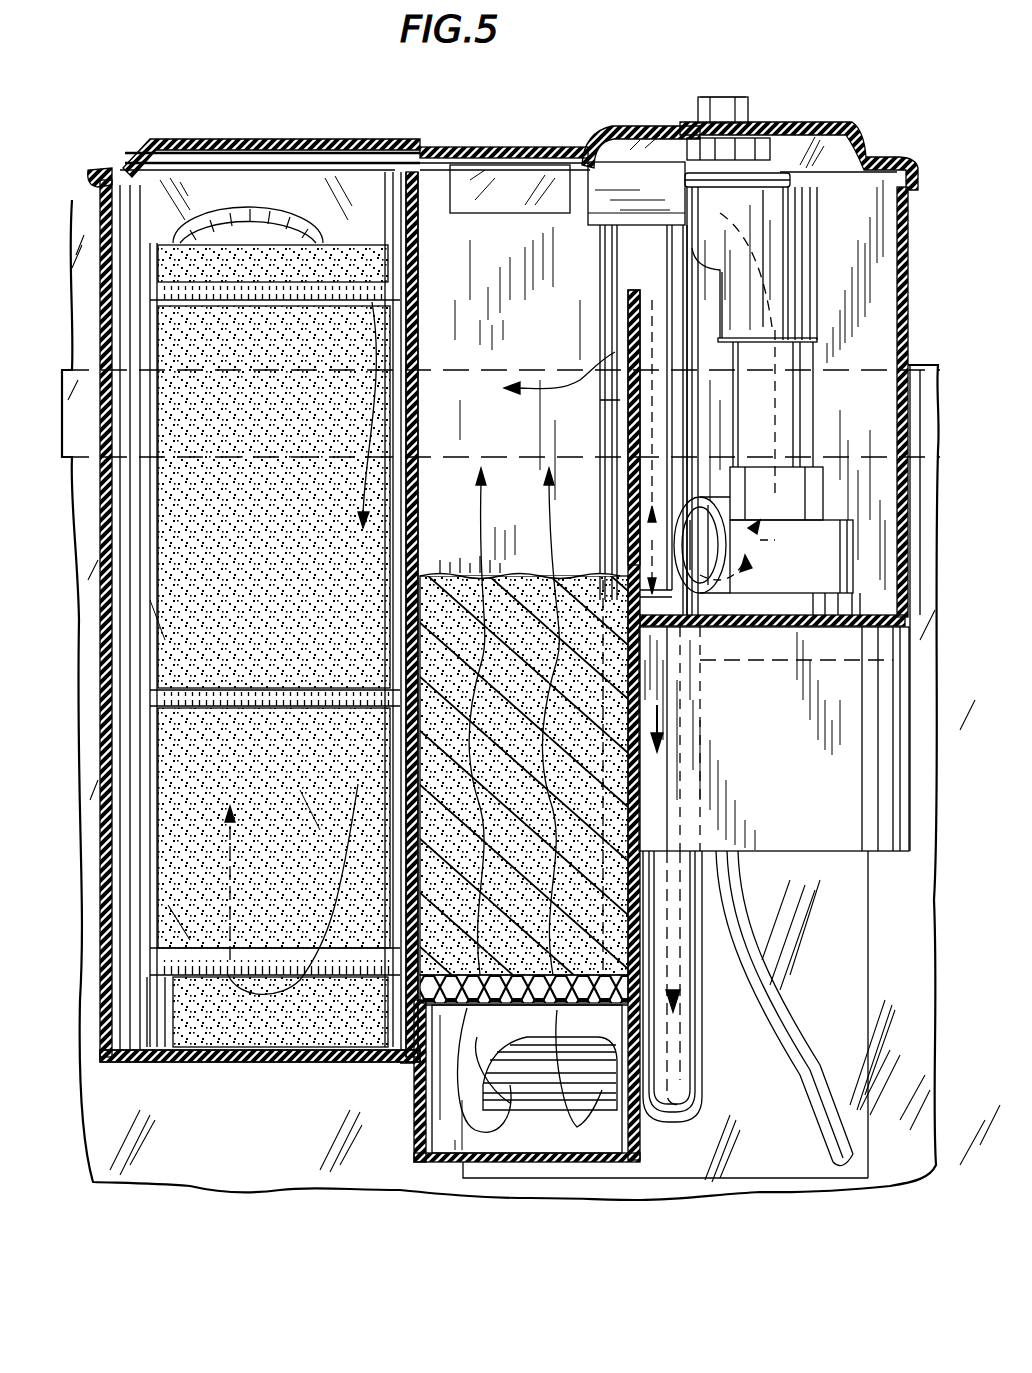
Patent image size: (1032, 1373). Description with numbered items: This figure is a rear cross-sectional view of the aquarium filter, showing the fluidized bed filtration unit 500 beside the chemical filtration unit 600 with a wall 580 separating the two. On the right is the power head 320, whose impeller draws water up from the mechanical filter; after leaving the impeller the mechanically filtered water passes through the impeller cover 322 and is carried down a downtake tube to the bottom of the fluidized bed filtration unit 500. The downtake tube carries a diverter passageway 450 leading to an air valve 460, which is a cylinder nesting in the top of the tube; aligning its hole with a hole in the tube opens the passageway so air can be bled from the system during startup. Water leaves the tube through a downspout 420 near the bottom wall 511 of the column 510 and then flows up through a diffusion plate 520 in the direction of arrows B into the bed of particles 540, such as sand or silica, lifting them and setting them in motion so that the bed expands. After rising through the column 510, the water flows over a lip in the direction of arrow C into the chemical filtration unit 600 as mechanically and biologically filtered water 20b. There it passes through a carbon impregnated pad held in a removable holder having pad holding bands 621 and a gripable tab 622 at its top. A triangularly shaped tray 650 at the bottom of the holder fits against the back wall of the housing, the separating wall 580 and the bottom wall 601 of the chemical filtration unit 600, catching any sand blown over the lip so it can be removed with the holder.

The chemical filtration unit 600 is at (223, 130).
The gripable tab 622 is at (265, 222).
The pad holding bands 621 is at (232, 297).
The bottom wall 601 is at (236, 1068).
The triangularly shaped tray 650 is at (212, 1066).
The fluidized bed filtration unit 500 is at (516, 128).
The wall 580 is at (418, 348).
The column 510 is at (478, 262).
The diverter passageway 450 is at (603, 358).
The mechanically and biologically filtered water 20b is at (492, 439).
The bed of particles 540 is at (428, 598).
The bottom wall 511 is at (435, 1166).
The downspout 420 is at (474, 1060).
The diffusion plate 520 is at (563, 1020).
The air valve 460 is at (603, 187).
The impeller cover 322 is at (818, 574).
The power head 320 is at (795, 851).